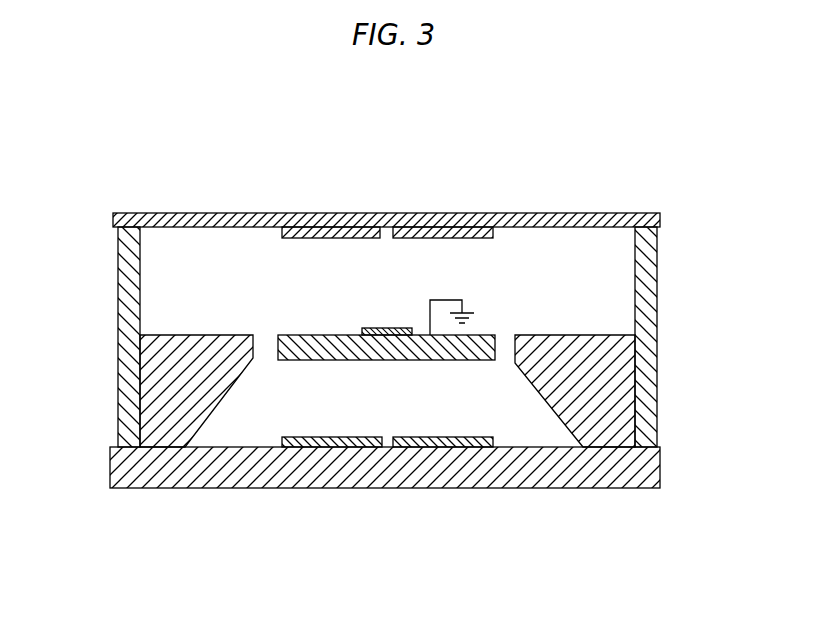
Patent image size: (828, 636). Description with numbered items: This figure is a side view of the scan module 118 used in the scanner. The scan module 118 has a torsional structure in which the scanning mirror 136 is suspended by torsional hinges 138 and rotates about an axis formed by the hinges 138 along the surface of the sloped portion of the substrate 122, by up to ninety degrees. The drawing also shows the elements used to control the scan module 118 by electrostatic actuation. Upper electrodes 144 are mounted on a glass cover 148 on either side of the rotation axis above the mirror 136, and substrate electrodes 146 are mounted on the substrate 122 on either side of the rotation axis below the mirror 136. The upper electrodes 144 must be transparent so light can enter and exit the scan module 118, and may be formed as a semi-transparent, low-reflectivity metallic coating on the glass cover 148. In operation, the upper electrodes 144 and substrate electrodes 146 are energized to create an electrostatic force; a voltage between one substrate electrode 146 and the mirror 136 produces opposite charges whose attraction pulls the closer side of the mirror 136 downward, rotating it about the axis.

The glass cover 148 is at (172, 212).
The upper electrodes 144 is at (415, 228).
The scan module 118 is at (317, 318).
The torsional hinges 138 is at (370, 327).
The scanning mirror 136 is at (290, 363).
The substrate electrodes 146 is at (423, 440).
The substrate 122 is at (608, 470).